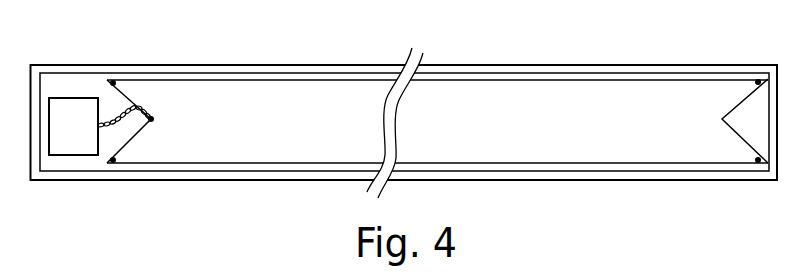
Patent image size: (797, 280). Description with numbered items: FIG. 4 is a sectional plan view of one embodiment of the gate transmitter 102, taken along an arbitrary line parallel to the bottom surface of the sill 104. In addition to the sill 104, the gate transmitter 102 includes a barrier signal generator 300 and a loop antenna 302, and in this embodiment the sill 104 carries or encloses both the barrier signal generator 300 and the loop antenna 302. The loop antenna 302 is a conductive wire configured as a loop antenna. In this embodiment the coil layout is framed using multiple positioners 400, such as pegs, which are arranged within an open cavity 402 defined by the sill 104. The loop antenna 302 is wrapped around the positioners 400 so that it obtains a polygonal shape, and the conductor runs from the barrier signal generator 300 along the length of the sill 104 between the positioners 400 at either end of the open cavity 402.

The gate transmitter 102 is at (652, 59).
The sill 104 is at (240, 64).
The barrier signal generator 300 is at (71, 113).
The loop antenna 302 is at (323, 80).
The positioners 400 is at (560, 77).
The open cavity 402 is at (150, 118).